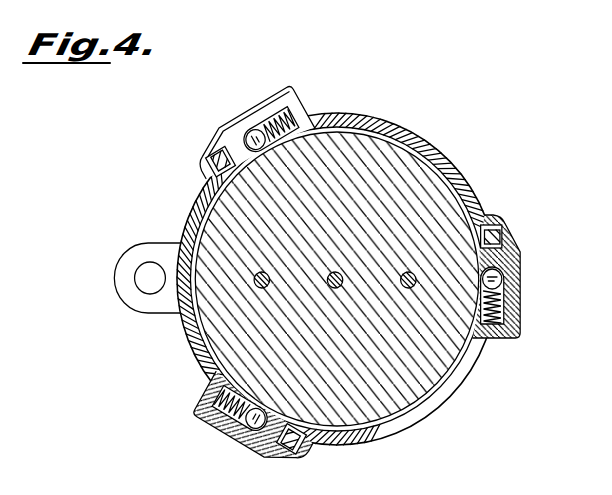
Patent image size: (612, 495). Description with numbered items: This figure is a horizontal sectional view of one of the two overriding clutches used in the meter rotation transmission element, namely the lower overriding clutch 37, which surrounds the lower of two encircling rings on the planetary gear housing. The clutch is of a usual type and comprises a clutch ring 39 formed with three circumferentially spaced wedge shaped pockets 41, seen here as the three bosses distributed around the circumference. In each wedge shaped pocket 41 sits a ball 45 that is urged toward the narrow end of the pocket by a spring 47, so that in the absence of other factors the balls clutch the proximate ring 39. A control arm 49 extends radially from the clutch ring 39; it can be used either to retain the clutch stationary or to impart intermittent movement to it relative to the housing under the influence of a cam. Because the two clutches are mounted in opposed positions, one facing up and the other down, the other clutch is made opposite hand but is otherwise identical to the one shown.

The lower overriding clutch 37 is at (468, 376).
The clutch ring 39 is at (186, 345).
The wedge shaped pocket 41 is at (510, 249).
The ball 45 is at (497, 281).
The spring 47 is at (503, 312).
The control arm 49 is at (131, 246).